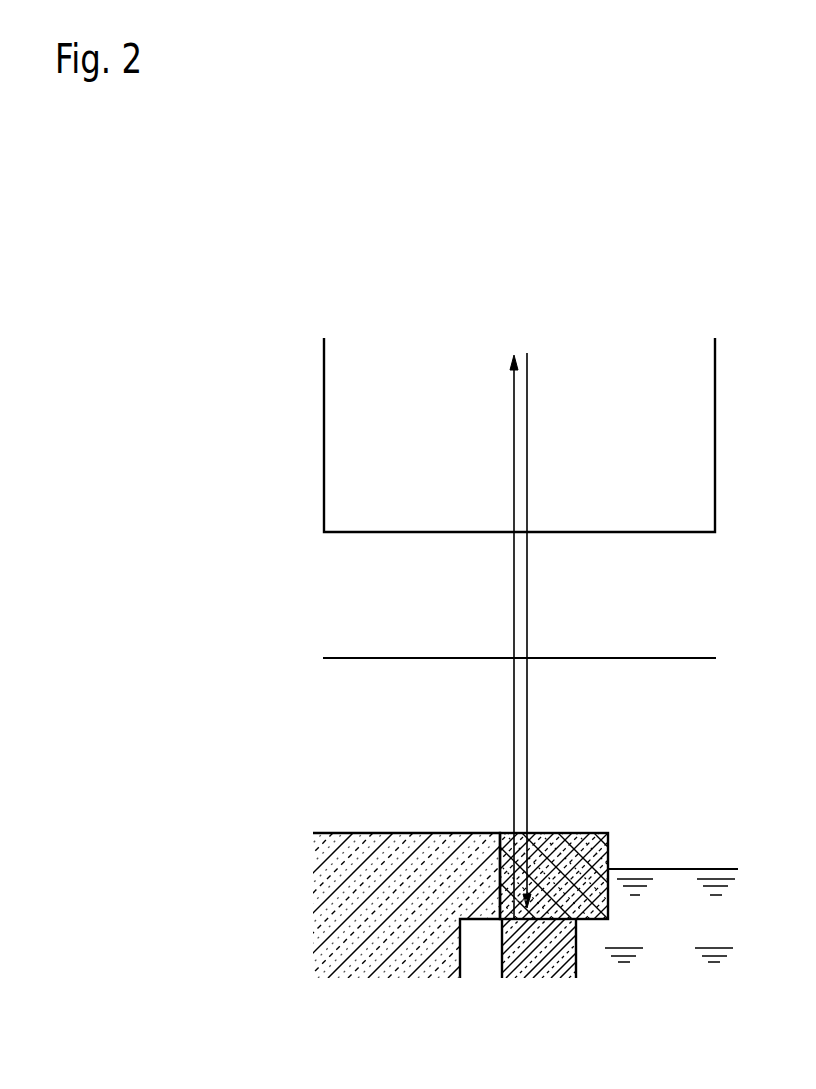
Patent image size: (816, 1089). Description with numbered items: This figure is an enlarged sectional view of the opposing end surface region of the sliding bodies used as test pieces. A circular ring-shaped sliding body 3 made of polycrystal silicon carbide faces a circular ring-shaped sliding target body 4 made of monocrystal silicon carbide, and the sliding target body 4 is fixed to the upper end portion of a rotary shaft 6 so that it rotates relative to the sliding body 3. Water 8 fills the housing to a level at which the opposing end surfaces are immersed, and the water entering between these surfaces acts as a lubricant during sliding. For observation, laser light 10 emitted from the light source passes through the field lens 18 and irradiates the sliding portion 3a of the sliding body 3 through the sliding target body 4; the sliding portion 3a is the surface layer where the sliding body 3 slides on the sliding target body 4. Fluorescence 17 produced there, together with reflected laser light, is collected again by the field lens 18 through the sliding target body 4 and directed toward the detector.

The field lens 18 is at (350, 432).
The fluorescence 17 is at (514, 592).
The laser light 10 is at (527, 592).
The sliding target body 4 is at (553, 917).
The sliding portion 3a is at (557, 907).
The water 8 is at (682, 896).
The rotary shaft 6 is at (385, 947).
The sliding body 3 is at (540, 963).